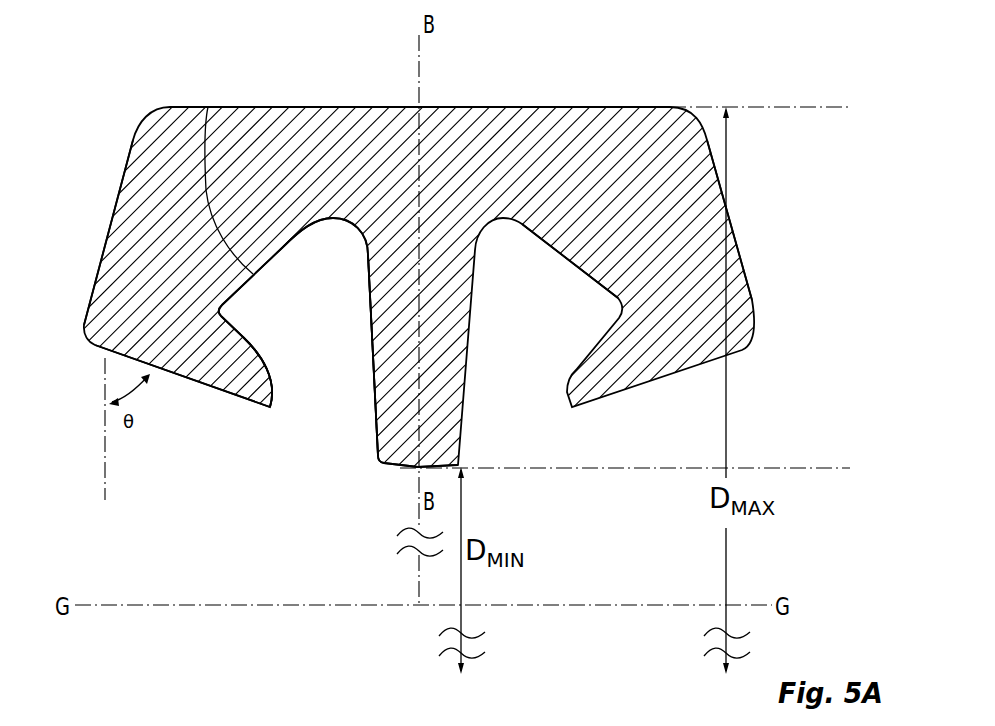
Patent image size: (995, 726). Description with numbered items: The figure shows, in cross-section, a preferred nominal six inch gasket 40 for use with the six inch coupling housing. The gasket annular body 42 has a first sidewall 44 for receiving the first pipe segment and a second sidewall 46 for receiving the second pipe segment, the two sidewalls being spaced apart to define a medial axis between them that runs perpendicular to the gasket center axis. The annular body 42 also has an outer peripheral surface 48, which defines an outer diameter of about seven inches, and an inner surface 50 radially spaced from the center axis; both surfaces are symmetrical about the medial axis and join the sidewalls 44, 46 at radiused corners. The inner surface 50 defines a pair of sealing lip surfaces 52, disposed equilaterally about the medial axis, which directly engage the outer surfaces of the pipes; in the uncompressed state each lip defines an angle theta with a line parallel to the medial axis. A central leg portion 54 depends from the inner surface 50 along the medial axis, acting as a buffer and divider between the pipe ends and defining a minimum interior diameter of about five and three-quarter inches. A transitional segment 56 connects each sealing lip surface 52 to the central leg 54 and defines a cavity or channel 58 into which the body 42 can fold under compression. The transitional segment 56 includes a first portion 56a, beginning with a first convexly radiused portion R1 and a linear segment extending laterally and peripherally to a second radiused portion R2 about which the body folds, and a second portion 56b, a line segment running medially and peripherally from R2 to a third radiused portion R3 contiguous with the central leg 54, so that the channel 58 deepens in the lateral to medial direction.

The gasket 40 is at (528, 107).
The gasket annular body 42 is at (638, 134).
The first sidewall 44 is at (107, 233).
The second sidewall 46 is at (750, 290).
The outer peripheral surface 48 is at (268, 107).
The inner surface 50 is at (580, 272).
The sealing lip surface 52 is at (177, 368).
The central leg portion 54 is at (372, 413).
The transitional segment 56 is at (292, 247).
The first portion of transitional segment 56a is at (240, 360).
The second portion of transitional segment 56b is at (208, 107).
The cavity or channel 58 is at (348, 355).
The first convexly radiused portion R1 is at (286, 383).
The second radiused portion R2 is at (226, 310).
The third radiused portion R3 is at (345, 229).